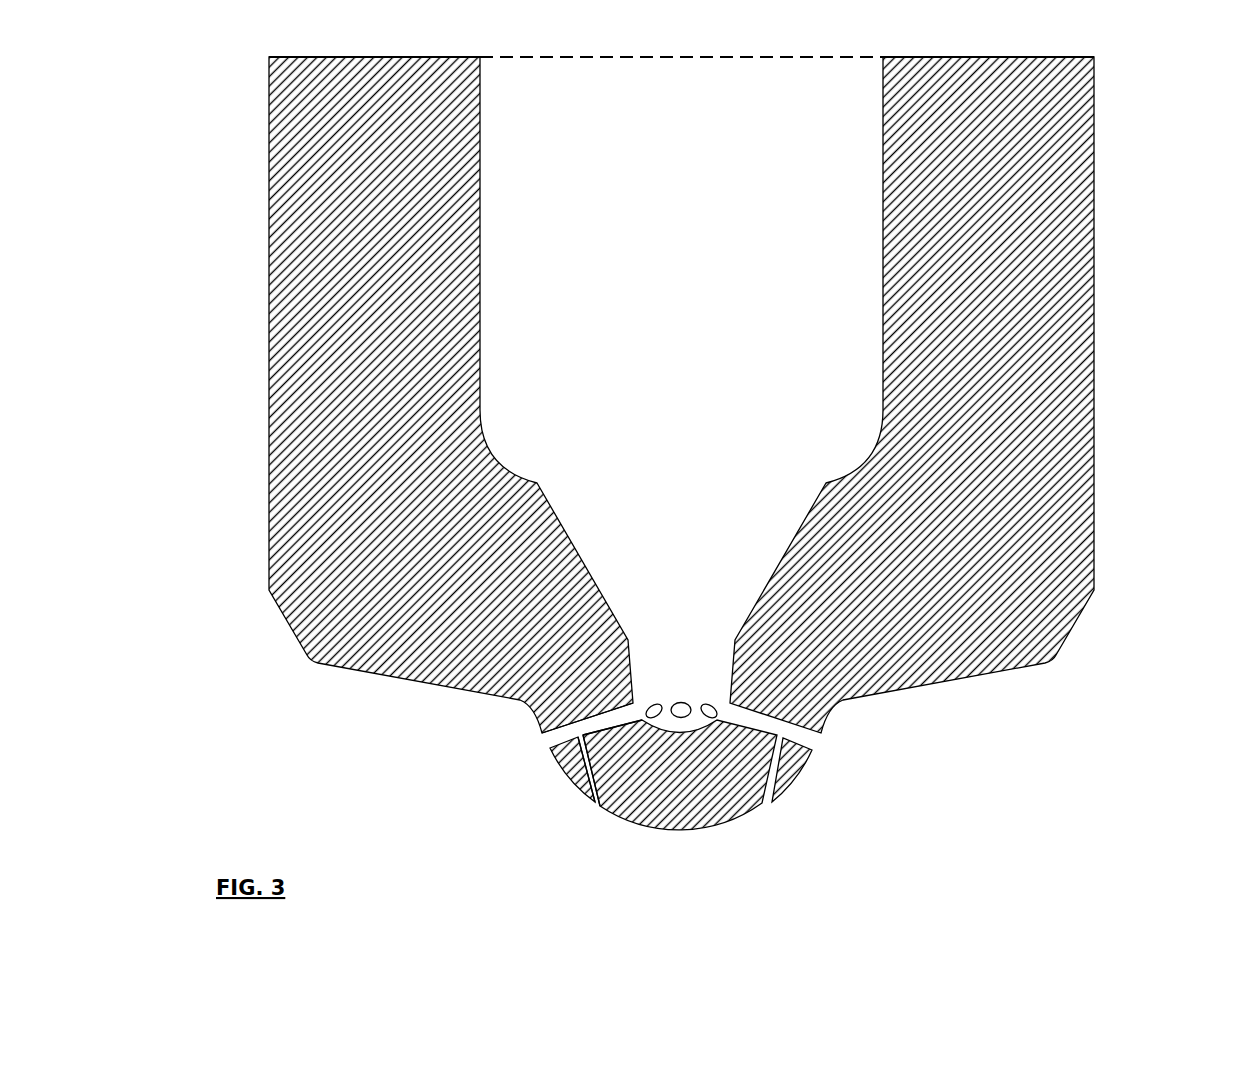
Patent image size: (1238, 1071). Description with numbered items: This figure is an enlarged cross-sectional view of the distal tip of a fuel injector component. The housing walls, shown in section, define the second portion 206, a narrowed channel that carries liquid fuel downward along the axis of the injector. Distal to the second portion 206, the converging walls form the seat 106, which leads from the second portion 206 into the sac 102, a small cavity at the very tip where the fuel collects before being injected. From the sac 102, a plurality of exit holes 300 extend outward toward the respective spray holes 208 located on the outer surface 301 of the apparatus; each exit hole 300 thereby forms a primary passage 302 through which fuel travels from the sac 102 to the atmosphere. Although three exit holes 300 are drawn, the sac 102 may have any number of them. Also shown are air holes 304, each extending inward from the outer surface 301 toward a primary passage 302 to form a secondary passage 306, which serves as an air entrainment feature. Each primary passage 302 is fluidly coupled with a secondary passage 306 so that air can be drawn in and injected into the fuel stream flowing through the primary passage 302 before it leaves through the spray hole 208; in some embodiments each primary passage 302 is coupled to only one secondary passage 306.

The sac 102 is at (700, 672).
The seat 106 is at (580, 552).
The second portion 206 is at (528, 256).
The spray hole 208 is at (530, 742).
The exit hole 300 is at (681, 718).
The outer surface 301 is at (563, 772).
The primary passage 302 is at (578, 715).
The air hole 304 is at (593, 818).
The secondary passage 306 is at (593, 765).